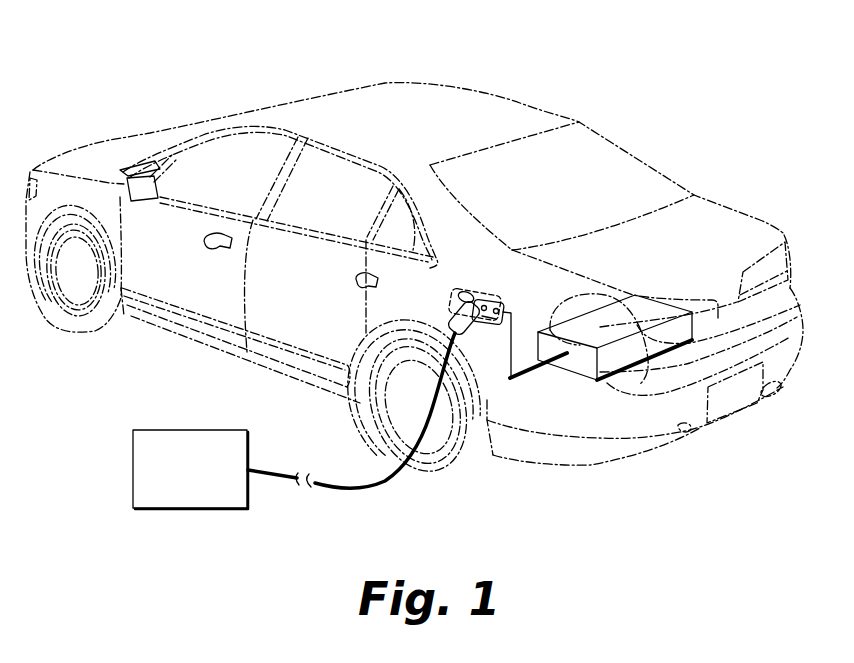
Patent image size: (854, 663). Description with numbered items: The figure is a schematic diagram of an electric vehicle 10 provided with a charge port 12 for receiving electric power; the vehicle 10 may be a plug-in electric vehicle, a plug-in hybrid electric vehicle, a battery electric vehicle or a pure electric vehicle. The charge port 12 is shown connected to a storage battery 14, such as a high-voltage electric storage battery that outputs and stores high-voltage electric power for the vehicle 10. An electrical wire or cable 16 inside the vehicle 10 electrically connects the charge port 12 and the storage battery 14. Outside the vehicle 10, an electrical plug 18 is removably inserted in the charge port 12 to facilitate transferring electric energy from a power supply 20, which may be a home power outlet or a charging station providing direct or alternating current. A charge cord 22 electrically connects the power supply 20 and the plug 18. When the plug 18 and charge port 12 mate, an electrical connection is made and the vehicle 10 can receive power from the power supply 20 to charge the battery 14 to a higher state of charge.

The electric vehicle 10 is at (552, 112).
The charge port 12 is at (487, 330).
The storage battery 14 is at (667, 302).
The electrical wire or cable 16 is at (560, 362).
The electrical plug 18 is at (472, 285).
The power supply 20 is at (133, 470).
The charge cord 22 is at (370, 492).